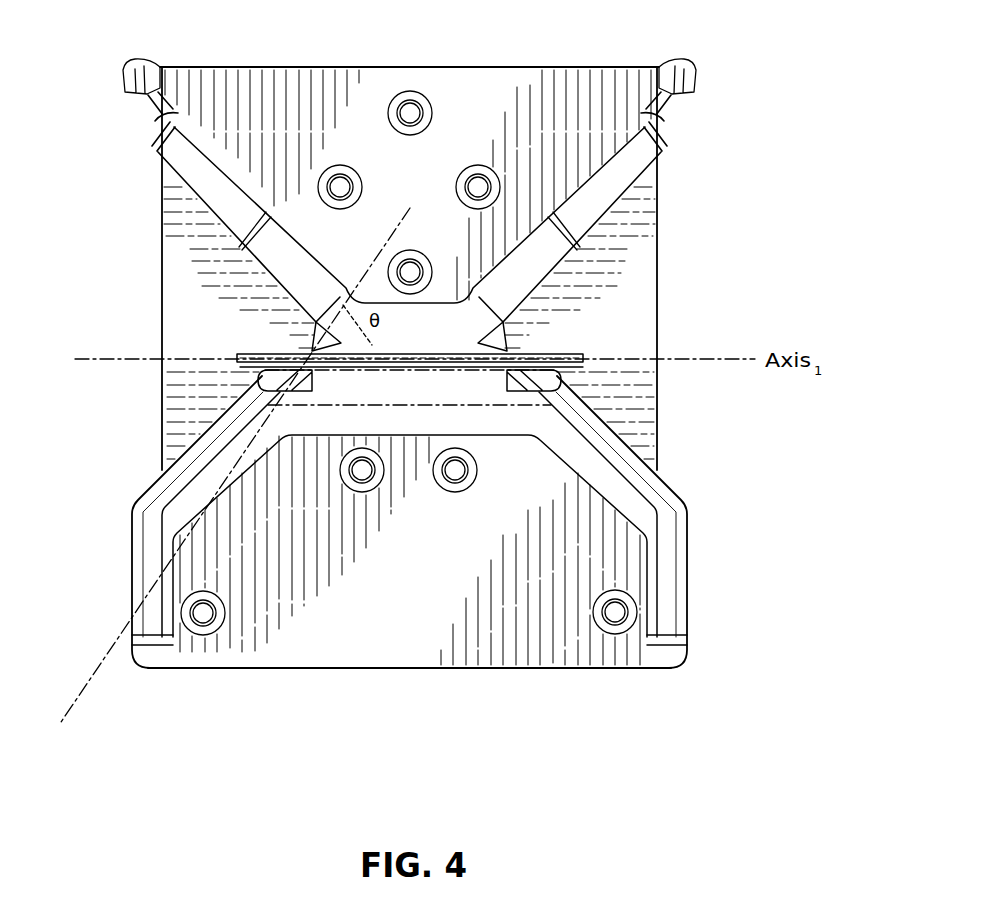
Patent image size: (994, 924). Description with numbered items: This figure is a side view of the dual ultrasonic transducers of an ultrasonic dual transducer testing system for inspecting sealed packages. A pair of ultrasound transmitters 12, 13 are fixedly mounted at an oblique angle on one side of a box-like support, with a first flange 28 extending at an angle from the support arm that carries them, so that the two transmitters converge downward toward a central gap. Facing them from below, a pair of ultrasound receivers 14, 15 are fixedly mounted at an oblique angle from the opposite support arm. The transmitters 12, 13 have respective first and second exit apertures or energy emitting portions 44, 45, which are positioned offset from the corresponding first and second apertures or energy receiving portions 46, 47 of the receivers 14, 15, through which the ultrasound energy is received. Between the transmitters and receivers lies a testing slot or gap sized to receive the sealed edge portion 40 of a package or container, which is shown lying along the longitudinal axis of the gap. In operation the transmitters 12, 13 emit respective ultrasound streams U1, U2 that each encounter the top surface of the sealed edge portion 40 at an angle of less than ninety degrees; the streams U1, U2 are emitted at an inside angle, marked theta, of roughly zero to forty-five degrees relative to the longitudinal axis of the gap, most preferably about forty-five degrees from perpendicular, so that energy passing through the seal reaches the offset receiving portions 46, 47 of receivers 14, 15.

The first flange 28 is at (483, 84).
The ultrasound transmitter 12 is at (217, 192).
The ultrasound transmitter 13 is at (608, 186).
The first exit aperture or energy emitting portion 44 is at (293, 297).
The second exit aperture or energy emitting portion 45 is at (474, 306).
The sealed edge portion 40 is at (583, 356).
The first aperture or energy receiving portion 46 is at (262, 373).
The second aperture or energy receiving portion 47 is at (558, 368).
The ultrasound receiver 14 is at (205, 432).
The ultrasound receiver 15 is at (605, 432).
The ultrasound stream U1 is at (305, 346).
The ultrasound stream U2 is at (490, 338).